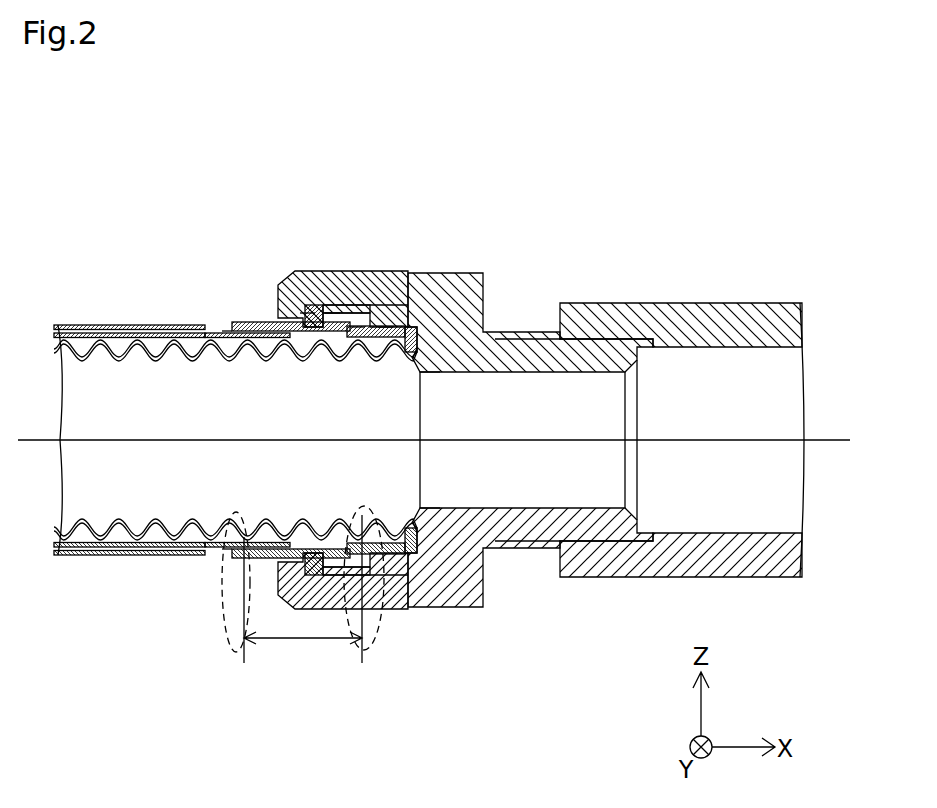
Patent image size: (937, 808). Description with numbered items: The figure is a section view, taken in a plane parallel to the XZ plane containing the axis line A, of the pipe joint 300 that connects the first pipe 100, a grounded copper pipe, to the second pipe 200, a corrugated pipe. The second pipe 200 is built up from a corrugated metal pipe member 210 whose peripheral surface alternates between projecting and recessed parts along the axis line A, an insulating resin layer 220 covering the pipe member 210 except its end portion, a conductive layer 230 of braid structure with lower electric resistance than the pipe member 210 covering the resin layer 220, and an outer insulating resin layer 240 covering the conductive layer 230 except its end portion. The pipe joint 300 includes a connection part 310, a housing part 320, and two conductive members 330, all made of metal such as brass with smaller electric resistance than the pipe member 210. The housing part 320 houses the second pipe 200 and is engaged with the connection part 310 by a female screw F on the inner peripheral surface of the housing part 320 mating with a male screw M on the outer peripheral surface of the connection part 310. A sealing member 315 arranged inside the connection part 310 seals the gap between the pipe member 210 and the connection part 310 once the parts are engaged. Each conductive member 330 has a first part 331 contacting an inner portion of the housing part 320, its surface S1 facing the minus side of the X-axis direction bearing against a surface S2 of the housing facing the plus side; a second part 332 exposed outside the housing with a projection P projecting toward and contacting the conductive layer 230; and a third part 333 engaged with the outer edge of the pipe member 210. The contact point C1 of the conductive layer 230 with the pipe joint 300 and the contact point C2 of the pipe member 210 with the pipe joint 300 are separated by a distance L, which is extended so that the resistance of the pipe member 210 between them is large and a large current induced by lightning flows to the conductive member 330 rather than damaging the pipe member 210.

The first pipe 100 is at (705, 303).
The second pipe 200 is at (45, 240).
The pipe member 210 is at (82, 348).
The resin layer 220 is at (213, 337).
The conductive layer 230 is at (165, 329).
The resin layer 240 is at (113, 337).
The projection P is at (222, 332).
The pipe joint 300 is at (303, 130).
The connection part 310 is at (445, 300).
The sealing member 315 is at (432, 315).
The housing part 320 is at (403, 320).
The conductive member 330 is at (245, 190).
The first part 331 is at (313, 313).
The second part 332 is at (248, 324).
The third part 333 is at (365, 326).
The surface S1 is at (282, 312).
The surface S2 is at (325, 312).
The male screw M is at (355, 327).
The female screw F is at (383, 327).
The axis line A is at (33, 438).
The contact point C1 is at (228, 595).
The contact point C2 is at (370, 592).
The distance L is at (303, 651).